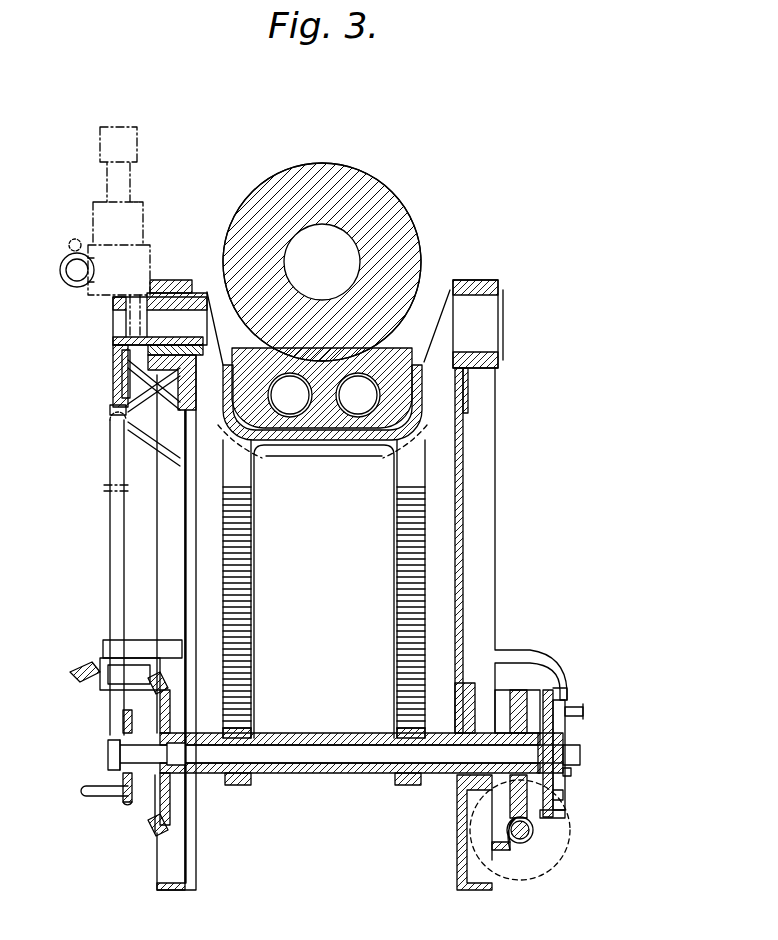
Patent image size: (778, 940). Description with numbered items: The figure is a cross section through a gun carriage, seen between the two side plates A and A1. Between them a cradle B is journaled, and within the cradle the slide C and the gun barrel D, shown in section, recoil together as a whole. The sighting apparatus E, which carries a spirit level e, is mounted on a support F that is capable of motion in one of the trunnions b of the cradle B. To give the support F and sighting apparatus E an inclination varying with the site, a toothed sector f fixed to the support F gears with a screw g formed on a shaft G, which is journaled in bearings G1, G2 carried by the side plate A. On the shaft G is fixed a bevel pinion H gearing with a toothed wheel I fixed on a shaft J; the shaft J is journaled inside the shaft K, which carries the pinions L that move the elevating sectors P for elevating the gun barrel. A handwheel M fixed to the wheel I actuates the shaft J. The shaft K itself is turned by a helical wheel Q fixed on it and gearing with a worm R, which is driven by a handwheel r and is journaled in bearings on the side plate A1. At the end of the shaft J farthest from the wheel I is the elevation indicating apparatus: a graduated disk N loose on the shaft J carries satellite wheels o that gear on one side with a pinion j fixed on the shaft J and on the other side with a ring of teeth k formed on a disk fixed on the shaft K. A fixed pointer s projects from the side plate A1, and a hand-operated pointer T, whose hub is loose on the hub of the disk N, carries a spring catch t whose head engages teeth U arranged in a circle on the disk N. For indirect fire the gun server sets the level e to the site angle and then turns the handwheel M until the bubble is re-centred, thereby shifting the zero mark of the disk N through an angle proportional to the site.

The sighting apparatus E is at (137, 229).
The spirit level e is at (75, 238).
The trunnion b is at (180, 282).
The support F is at (128, 324).
The side plate A is at (186, 542).
The screw g is at (113, 378).
The toothed sector f is at (113, 396).
The bearing G1 is at (112, 410).
The shaft G is at (112, 463).
The bearing G2 is at (104, 648).
The bevel pinion H is at (76, 683).
The toothed wheel I is at (156, 700).
The handwheel M is at (118, 783).
The gun barrel D is at (398, 218).
The slide C is at (392, 352).
The cradle B is at (320, 440).
The elevating sectors P is at (252, 590).
The shaft K is at (332, 738).
The shaft J is at (316, 762).
The pinions L is at (240, 786).
The side plate A1 is at (464, 516).
The ring of teeth k is at (540, 690).
The pointer T is at (556, 730).
The satellite wheels o is at (572, 703).
The fixed pointer s is at (566, 688).
The spring catch t is at (586, 712).
The pinion j is at (566, 776).
The teeth U is at (566, 796).
The graduated disk N is at (566, 815).
The worm R is at (533, 840).
The helical wheel Q is at (480, 840).
The handwheel r is at (536, 880).